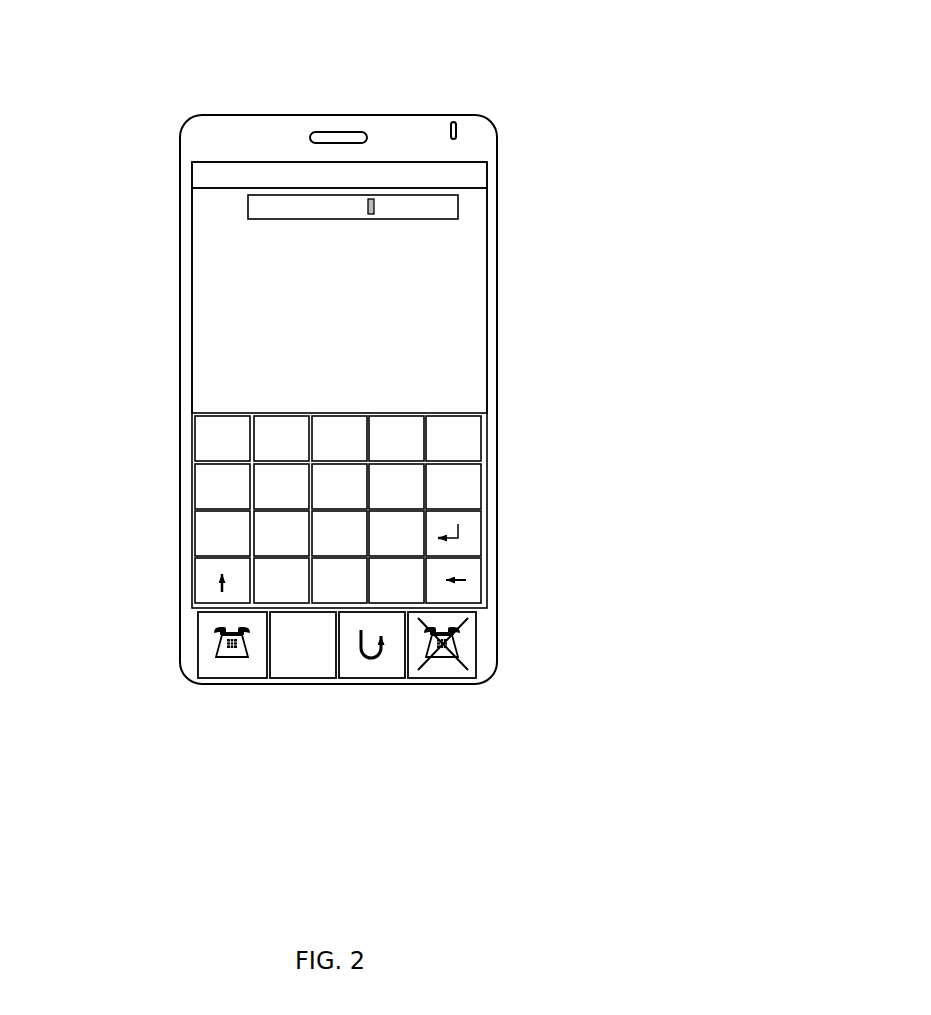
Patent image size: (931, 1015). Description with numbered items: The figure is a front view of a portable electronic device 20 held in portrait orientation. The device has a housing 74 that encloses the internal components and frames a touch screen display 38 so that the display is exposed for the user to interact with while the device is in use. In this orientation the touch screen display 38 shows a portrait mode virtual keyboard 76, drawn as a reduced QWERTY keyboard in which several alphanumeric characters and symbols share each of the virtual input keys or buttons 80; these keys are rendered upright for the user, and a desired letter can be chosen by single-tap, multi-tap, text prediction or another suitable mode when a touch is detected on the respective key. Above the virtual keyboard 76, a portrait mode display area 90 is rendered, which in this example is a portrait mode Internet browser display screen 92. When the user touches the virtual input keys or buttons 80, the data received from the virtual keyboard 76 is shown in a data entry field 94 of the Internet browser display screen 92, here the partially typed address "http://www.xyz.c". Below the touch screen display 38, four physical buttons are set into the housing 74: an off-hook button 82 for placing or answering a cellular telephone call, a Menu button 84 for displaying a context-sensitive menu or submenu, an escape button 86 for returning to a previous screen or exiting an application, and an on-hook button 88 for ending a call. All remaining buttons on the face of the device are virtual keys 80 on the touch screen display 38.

The portable electronic device 20 is at (540, 68).
The housing 74 is at (492, 383).
The portrait mode display area 90 is at (490, 173).
The portrait mode Internet browser display screen 92 is at (455, 283).
The data entry field 94 is at (453, 205).
The virtual input keys or buttons 80 is at (453, 487).
The touch screen display 38 is at (483, 546).
The portrait mode virtual keyboard 76 is at (195, 583).
The off-hook button 82 is at (240, 660).
The Menu button 84 is at (316, 660).
The escape button 86 is at (385, 663).
The on-hook button 88 is at (447, 663).